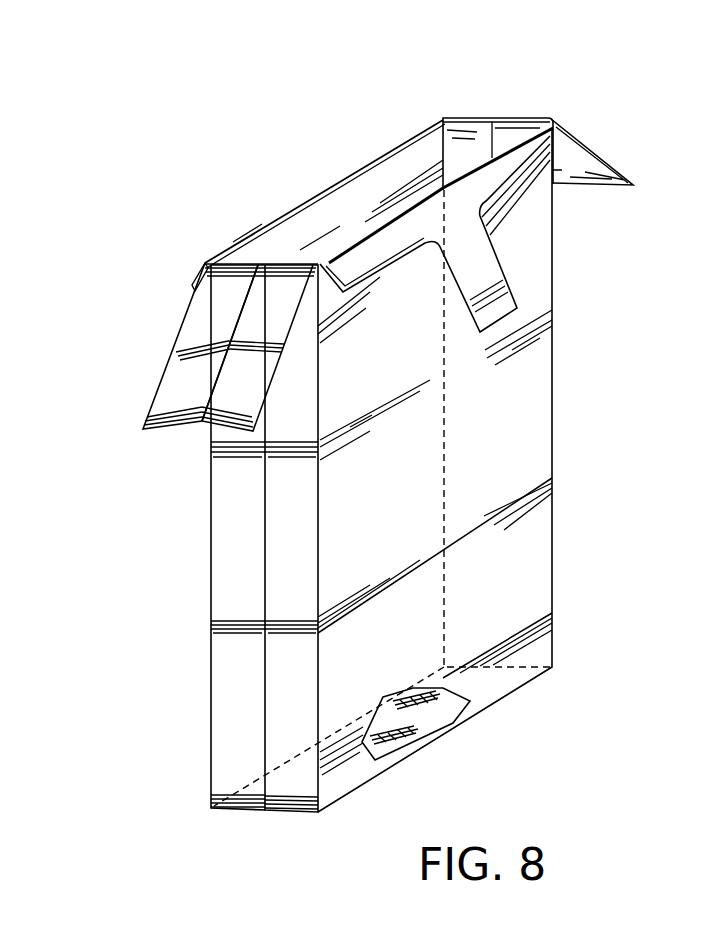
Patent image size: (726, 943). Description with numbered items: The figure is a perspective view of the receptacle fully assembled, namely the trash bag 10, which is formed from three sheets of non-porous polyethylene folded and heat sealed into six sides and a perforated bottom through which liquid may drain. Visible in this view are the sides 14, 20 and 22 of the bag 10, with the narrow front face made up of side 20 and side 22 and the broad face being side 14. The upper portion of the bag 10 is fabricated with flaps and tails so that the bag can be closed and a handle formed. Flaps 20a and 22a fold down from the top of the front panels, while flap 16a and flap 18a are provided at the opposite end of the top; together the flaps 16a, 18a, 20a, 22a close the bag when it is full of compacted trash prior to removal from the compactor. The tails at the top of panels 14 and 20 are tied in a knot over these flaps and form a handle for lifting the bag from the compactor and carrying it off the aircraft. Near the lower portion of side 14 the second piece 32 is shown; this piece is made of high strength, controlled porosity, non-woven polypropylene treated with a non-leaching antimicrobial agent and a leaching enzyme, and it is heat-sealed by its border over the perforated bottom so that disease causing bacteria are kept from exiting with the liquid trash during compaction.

The trash bag 10 is at (290, 173).
The side 14 is at (530, 422).
The flap 16a is at (462, 117).
The flap 18a is at (593, 148).
The side 20 is at (223, 602).
The flap 20a is at (170, 358).
The side 22 is at (287, 667).
The flap 22a is at (224, 404).
The second piece 32 is at (463, 710).